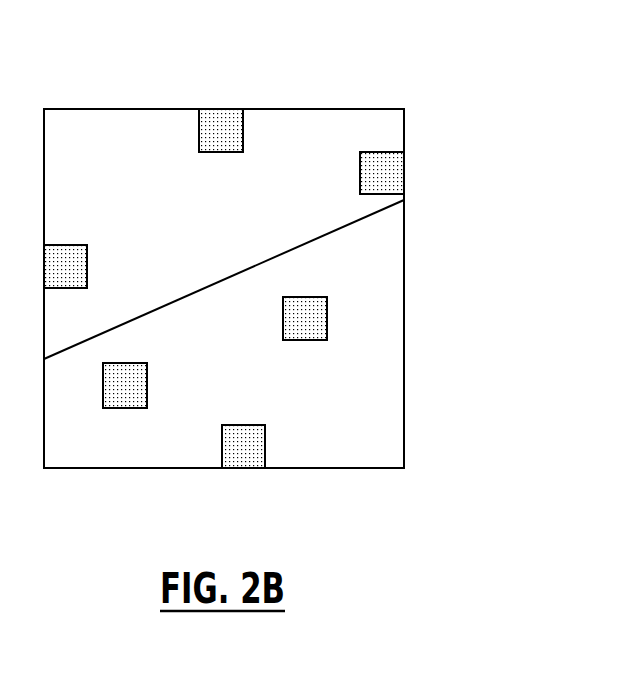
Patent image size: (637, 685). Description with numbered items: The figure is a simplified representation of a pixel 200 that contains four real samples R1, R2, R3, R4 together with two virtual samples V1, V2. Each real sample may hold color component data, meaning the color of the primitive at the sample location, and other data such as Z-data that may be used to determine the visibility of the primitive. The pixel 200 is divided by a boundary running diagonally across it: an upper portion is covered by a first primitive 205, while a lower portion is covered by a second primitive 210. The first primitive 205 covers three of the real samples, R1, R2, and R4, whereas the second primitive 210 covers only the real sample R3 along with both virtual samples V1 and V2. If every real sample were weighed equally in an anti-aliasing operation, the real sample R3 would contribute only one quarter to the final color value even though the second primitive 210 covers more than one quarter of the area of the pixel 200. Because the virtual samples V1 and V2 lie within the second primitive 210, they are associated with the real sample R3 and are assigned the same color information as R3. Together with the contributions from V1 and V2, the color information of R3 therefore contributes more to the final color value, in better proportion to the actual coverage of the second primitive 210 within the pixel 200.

The pixel 200 is at (404, 108).
The first primitive 205 is at (404, 131).
The second primitive 210 is at (404, 360).
The real sample R1 is at (221, 152).
The real sample R2 is at (359, 173).
The real sample R3 is at (243, 424).
The real sample R4 is at (87, 266).
The virtual sample V1 is at (145, 385).
The virtual sample V2 is at (325, 318).